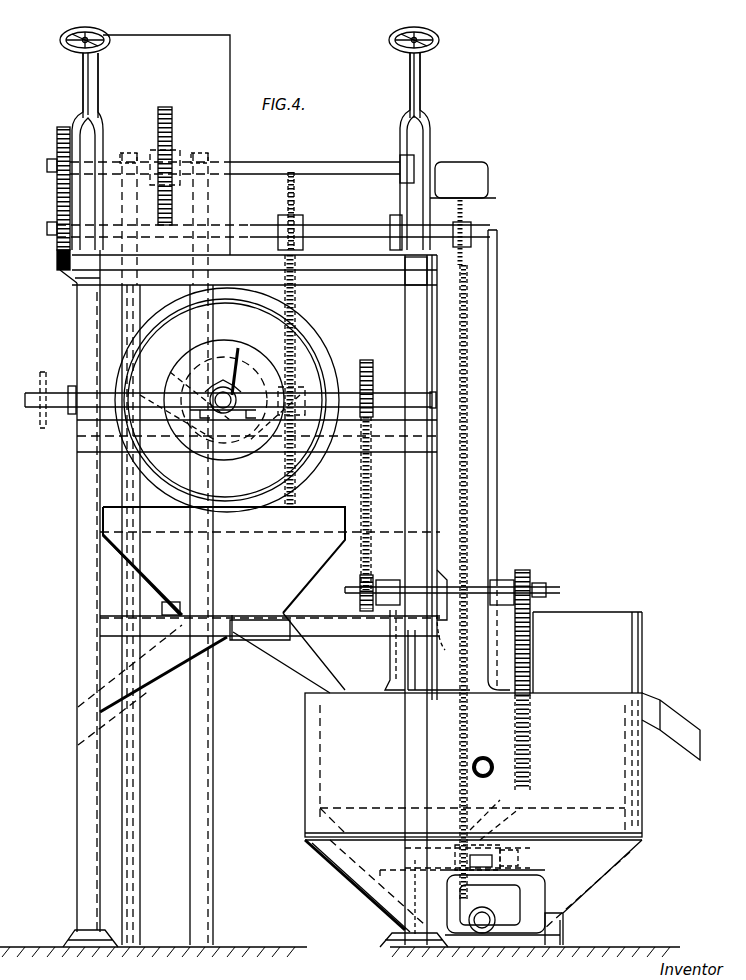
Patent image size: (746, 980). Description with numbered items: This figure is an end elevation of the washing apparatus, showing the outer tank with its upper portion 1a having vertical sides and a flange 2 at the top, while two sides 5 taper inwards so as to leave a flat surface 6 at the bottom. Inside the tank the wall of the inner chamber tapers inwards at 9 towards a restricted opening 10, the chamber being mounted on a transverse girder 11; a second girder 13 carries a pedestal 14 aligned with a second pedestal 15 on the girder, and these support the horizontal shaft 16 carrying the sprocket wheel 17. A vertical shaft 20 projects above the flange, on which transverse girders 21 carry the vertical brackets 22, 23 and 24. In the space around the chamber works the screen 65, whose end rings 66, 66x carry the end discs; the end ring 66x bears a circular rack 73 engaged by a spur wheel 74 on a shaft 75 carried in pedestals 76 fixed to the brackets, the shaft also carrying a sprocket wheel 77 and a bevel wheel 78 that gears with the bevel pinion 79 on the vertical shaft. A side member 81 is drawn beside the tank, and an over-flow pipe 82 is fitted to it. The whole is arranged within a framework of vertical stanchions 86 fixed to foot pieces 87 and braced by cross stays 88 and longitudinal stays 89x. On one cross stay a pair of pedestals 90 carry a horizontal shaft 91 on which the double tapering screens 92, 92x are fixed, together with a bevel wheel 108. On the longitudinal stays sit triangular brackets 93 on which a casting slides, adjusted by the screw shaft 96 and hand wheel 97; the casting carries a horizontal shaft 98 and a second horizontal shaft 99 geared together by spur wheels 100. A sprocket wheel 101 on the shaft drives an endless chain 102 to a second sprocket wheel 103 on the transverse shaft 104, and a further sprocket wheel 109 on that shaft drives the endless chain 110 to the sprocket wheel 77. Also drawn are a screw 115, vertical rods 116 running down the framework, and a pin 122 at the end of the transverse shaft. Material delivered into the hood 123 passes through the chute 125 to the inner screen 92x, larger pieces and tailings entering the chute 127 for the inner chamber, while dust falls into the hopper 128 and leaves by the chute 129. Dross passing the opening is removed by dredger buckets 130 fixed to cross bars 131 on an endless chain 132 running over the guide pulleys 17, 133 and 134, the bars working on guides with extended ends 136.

The upper portion of the tank 1a is at (668, 806).
The flange 2 is at (476, 686).
The tapering sides 5 is at (350, 868).
The flat surface 6 is at (492, 945).
The tapering wall portion 9 is at (345, 830).
The restricted opening 10 is at (412, 878).
The transverse girder 11 is at (424, 897).
The second girder 13 is at (518, 868).
The pedestal 14 is at (520, 856).
The second pedestal 15 is at (412, 852).
The horizontal shaft 16 is at (497, 868).
The sprocket wheel 17 is at (492, 820).
The vertical shaft 20 is at (425, 686).
The transverse girders 21 is at (398, 693).
The vertical bracket 22 is at (380, 628).
The vertical bracket 23 is at (492, 635).
The vertical bracket 24 is at (390, 657).
The screen 65 is at (587, 686).
The end ring 66 is at (642, 612).
The end ring 66x is at (532, 680).
The circular rack of spur teeth 73 is at (530, 633).
The spur wheel 74 is at (530, 572).
The shaft 75 is at (546, 591).
The pedestals 76 is at (372, 575).
The sprocket wheel 77 is at (358, 572).
The bevel wheel 78 is at (437, 522).
The bevel pinion 79 is at (432, 652).
The chute 81 is at (690, 728).
The over-flow pipe 82 is at (485, 757).
The vertical stanchions 86 is at (77, 520).
The foot pieces 87 is at (415, 962).
The cross stays 88 is at (256, 445).
The longitudinal stays 89x is at (72, 283).
The pedestals 90 is at (223, 388).
The horizontal shaft 91 is at (223, 408).
The outer screen 92 is at (335, 340).
The inner screen 92x is at (140, 350).
The triangular shaped brackets 93 is at (95, 147).
The screw shaft 96 is at (95, 88).
The hand wheel 97 is at (105, 33).
The horizontal shaft 98 is at (47, 228).
The second horizontal shaft 99 is at (47, 163).
The spur wheels 100 is at (58, 205).
The sprocket wheel 101 is at (294, 201).
The endless chain 102 is at (296, 316).
The second sprocket wheel 103 is at (292, 420).
The transverse shaft 104 is at (37, 405).
The bevel wheel 108 is at (250, 360).
The second sprocket wheel 109 is at (382, 388).
The endless chain 110 is at (383, 503).
The screw 115 is at (172, 127).
The guide rods 116 is at (205, 183).
The pin 122 is at (42, 372).
The hood 123 is at (166, 145).
The chute 125 is at (245, 448).
The chute 127 is at (262, 682).
The hopper 128 is at (248, 614).
The chute 129 is at (153, 676).
The dredger buckets 130 is at (490, 547).
The cross bars 131 is at (487, 546).
The endless chain 132 is at (460, 320).
The sprocket wheel 133 is at (482, 634).
The guide pulley 134 is at (466, 212).
The extended ends of the guides 136 is at (495, 530).